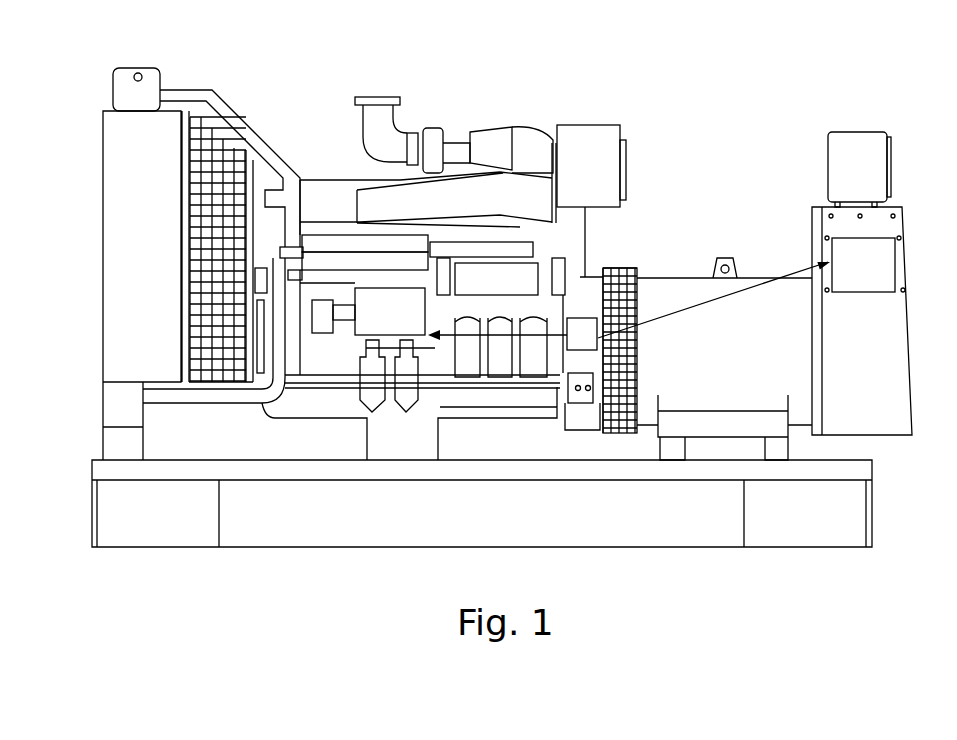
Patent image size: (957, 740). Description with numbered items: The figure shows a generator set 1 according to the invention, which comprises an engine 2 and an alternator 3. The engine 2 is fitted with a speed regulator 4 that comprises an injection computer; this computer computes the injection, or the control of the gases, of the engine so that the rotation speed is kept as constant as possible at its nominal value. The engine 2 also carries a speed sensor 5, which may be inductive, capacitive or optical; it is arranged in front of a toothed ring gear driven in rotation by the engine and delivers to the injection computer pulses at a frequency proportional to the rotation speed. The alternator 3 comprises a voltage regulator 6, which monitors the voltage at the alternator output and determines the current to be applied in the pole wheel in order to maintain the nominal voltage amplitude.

The generator set 1 is at (591, 104).
The engine 2 is at (308, 152).
The alternator 3 is at (860, 112).
The speed regulator 4 is at (370, 313).
The speed sensor 5 is at (582, 318).
The voltage regulator 6 is at (893, 258).